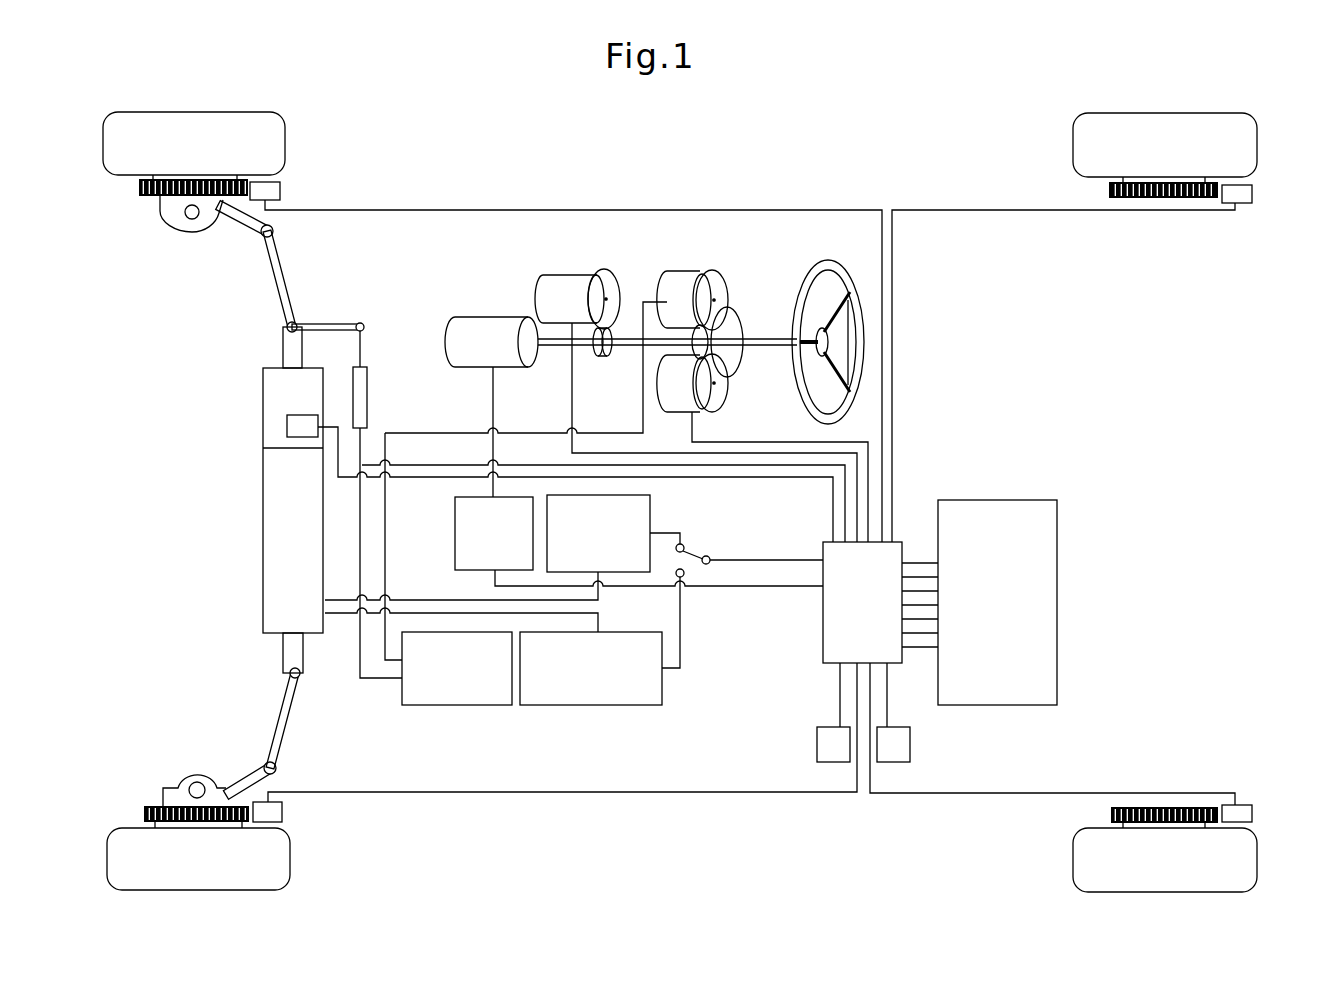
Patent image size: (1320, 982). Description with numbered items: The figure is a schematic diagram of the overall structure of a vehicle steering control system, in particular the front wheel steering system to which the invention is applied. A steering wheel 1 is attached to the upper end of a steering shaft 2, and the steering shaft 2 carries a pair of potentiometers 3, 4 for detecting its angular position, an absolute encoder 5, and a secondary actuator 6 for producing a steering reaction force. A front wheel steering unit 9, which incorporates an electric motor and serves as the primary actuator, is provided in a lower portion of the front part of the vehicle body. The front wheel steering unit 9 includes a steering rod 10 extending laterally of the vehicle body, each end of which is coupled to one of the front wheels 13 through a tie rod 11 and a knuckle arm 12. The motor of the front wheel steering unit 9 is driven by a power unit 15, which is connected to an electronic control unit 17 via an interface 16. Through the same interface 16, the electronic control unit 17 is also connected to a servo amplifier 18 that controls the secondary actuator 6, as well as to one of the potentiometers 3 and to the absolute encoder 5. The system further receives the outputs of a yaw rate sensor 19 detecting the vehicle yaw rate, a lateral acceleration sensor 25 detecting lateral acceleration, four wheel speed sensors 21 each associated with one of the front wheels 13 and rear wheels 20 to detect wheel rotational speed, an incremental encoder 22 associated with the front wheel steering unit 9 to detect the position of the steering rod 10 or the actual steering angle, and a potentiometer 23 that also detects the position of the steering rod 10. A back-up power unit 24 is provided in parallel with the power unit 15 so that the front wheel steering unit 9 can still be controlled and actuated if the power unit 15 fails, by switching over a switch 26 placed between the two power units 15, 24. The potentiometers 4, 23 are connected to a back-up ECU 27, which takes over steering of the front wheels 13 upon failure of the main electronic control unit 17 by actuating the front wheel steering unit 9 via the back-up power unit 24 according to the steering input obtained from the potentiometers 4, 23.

The steering wheel 1 is at (840, 263).
The steering shaft 2 is at (760, 335).
The potentiometer 3 is at (722, 405).
The potentiometer 4 is at (689, 277).
The absolute encoder 5 is at (571, 278).
The secondary actuator 6 is at (488, 318).
The front wheel steering unit 9 is at (268, 525).
The steering rod 10 is at (288, 352).
The tie rod 11 is at (286, 271).
The knuckle arm 12 is at (235, 226).
The front wheels 13 is at (230, 118).
The power unit 15 is at (640, 505).
The interface 16 is at (893, 662).
The electronic control unit 17 is at (1057, 558).
The servo amplifier 18 is at (455, 529).
The yaw rate sensor 19 is at (817, 750).
The rear wheels 20 is at (1193, 118).
The wheel speed sensors 21 is at (281, 197).
The incremental encoder 22 is at (290, 427).
The potentiometer 23 is at (368, 387).
The back-up power unit 24 is at (608, 712).
The lateral acceleration sensor 25 is at (908, 751).
The switch 26 is at (703, 553).
The back-up ECU 27 is at (498, 712).